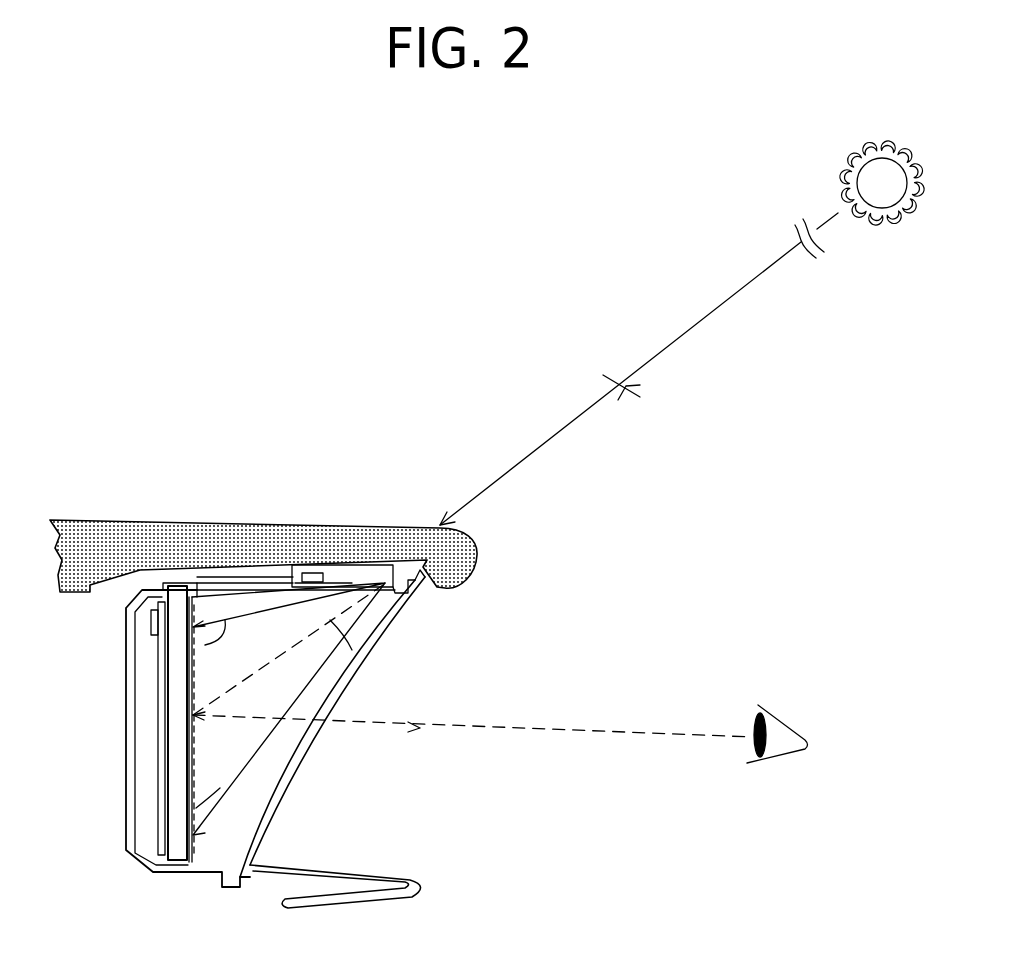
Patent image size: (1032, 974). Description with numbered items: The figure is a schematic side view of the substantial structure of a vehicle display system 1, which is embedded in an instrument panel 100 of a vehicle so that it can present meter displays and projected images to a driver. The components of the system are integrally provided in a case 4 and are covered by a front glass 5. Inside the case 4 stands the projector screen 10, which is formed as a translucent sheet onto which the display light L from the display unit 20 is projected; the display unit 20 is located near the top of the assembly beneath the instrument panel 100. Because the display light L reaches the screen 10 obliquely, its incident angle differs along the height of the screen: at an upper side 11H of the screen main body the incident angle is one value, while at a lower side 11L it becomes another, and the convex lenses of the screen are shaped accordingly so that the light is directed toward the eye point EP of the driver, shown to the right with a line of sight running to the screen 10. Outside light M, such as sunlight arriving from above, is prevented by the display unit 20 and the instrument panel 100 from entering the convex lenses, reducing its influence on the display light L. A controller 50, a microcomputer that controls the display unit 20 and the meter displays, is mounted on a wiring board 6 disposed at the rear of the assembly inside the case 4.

The vehicle display system 1 is at (243, 693).
The case 4 is at (142, 868).
The front glass 5 is at (262, 828).
The wiring board 6 is at (158, 676).
The projector screen 10 is at (212, 668).
The upper side of the main body 11H is at (204, 608).
The lower side of the main body 11L is at (200, 840).
The display unit 20 is at (347, 565).
The controller 50 is at (140, 630).
The instrument panel 100 is at (392, 526).
The display light L is at (330, 627).
The outside light M is at (717, 310).
The eye point EP is at (802, 703).